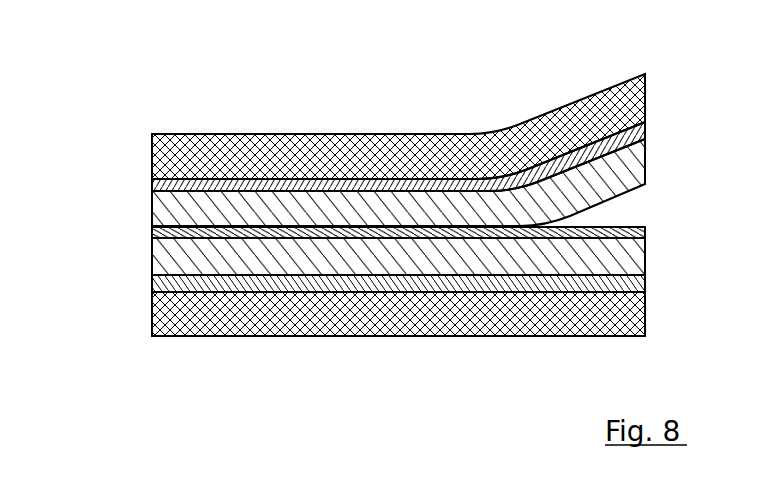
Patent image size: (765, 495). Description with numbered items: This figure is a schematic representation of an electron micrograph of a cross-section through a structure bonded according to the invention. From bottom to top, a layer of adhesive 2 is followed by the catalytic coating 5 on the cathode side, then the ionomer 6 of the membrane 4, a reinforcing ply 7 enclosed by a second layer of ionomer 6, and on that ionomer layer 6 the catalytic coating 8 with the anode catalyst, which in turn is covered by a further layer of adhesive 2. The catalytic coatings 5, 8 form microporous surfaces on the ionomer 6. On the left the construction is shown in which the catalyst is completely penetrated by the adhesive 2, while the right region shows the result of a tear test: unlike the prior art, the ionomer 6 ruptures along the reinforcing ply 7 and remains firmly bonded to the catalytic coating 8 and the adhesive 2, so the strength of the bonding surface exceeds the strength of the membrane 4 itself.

The adhesive 2 is at (160, 158).
The membrane 4 is at (132, 178).
The catalytic coating on the cathode side 5 is at (192, 285).
The ionomer 6 is at (285, 262).
The reinforcing ply 7 is at (215, 230).
The catalytic coating with the anode catalyst 8 is at (190, 186).